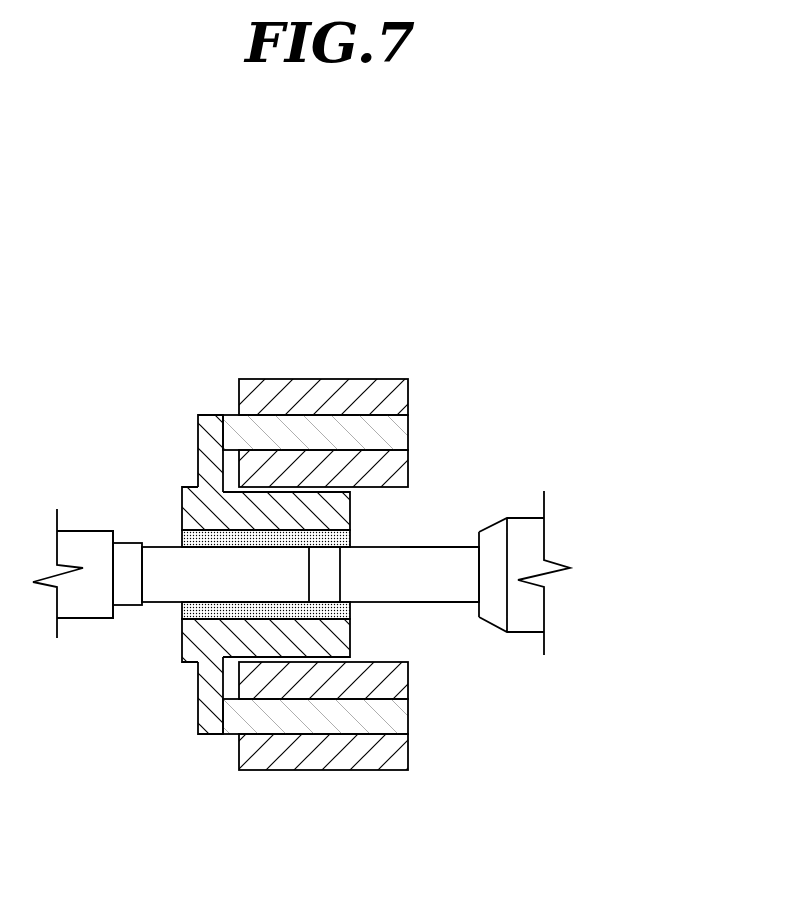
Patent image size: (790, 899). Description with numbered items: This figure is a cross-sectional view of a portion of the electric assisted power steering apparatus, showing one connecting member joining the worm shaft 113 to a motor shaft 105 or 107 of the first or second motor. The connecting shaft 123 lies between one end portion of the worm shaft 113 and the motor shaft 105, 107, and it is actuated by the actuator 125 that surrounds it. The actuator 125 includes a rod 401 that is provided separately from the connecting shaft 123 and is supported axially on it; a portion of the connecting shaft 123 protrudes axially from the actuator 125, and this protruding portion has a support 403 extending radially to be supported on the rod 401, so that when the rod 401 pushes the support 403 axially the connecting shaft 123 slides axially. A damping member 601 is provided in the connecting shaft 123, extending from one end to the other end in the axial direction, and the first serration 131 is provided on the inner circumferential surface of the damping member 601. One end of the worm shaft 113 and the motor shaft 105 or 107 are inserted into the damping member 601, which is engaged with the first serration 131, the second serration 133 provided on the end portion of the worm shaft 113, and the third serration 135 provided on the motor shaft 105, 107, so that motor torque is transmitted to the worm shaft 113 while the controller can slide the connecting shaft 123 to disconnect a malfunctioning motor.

The motor shaft 105 is at (86, 540).
The motor shaft 107 is at (85, 574).
The worm shaft 113 is at (527, 538).
The connecting shaft 123 is at (342, 510).
The actuator 125 is at (393, 468).
The first serration 131 is at (197, 595).
The second serration 133 is at (438, 603).
The third serration 135 is at (153, 603).
The rod 401 is at (393, 433).
The support 403 is at (210, 449).
The damping member 601 is at (333, 612).